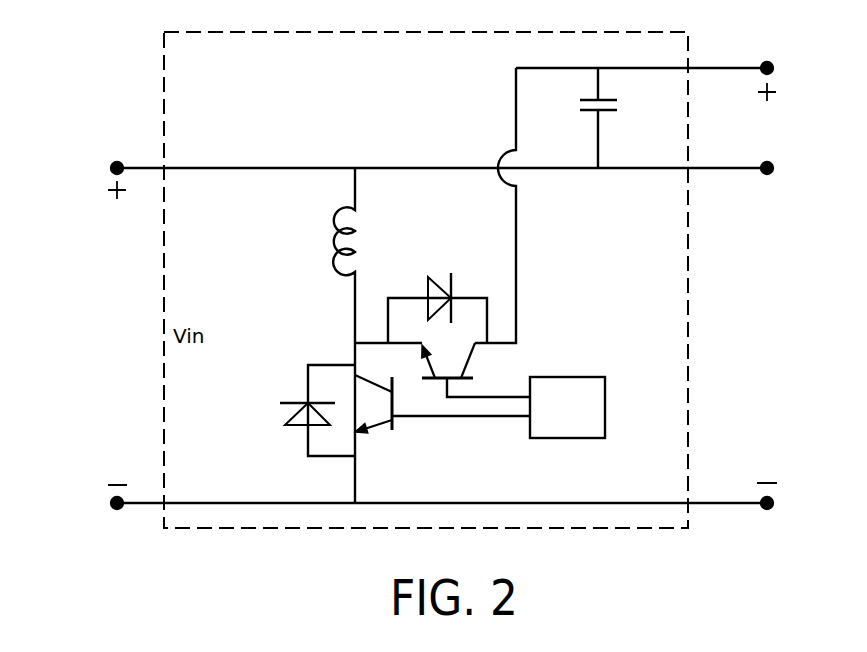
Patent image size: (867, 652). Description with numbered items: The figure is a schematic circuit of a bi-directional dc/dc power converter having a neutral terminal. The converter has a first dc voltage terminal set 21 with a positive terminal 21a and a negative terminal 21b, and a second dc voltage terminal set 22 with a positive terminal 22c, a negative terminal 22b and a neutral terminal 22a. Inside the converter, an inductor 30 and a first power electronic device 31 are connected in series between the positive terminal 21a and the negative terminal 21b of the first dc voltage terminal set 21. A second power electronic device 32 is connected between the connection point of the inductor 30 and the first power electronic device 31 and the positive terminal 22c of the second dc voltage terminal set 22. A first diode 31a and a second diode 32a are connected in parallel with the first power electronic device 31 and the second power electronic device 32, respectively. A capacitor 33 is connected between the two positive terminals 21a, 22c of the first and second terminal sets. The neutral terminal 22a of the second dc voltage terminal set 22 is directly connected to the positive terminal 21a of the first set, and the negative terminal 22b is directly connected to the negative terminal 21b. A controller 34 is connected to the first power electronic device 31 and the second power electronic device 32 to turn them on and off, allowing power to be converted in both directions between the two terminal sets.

The first dc voltage terminal set 21 is at (153, 315).
The positive terminal 21a is at (116, 159).
The negative terminal 21b is at (117, 517).
The second dc voltage terminal set 22 is at (622, 0).
The neutral terminal 22a is at (794, 169).
The negative terminal 22b is at (773, 515).
The positive terminal 22c is at (792, 79).
The inductor 30 is at (326, 335).
The first power electronic device 31 is at (442, 411).
The first diode 31a is at (296, 410).
The second power electronic device 32 is at (476, 370).
The second diode 32a is at (437, 293).
The capacitor 33 is at (614, 118).
The controller 34 is at (587, 407).